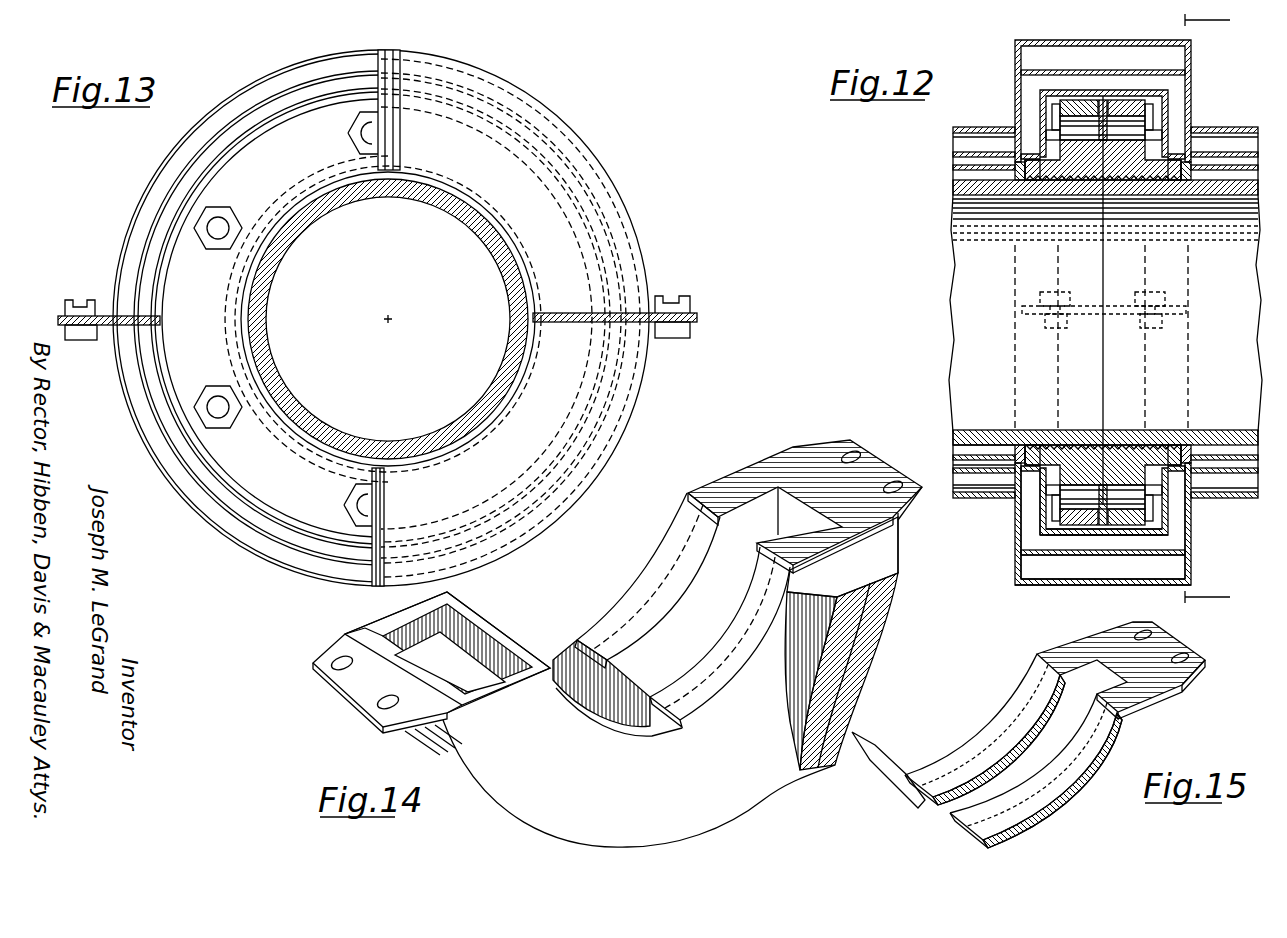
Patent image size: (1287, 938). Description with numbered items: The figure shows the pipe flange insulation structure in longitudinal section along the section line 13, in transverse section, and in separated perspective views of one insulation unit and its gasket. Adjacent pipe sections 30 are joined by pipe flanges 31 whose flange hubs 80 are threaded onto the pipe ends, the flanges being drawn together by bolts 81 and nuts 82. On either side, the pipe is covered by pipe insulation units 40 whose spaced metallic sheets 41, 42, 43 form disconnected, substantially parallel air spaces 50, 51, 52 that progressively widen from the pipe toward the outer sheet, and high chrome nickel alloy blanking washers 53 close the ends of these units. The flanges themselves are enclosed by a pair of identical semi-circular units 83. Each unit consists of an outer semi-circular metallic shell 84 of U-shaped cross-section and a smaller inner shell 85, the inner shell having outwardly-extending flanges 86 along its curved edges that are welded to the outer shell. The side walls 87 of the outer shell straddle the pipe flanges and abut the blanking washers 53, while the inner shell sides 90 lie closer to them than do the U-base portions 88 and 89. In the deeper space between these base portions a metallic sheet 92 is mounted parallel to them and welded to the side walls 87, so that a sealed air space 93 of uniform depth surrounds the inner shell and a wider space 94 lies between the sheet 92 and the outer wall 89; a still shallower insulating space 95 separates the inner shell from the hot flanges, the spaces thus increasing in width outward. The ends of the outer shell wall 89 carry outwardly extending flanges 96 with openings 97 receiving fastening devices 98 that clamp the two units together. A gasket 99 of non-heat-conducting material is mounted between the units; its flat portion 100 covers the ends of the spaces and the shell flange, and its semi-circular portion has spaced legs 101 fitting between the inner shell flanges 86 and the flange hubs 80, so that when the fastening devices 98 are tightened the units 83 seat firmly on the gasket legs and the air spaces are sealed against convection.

In FIG. 12, the section line 13— 13 is at (1221, 308).
In FIG. 13, the pipe section 30 is at (418, 204).
In FIG. 12, the pipe section 30 is at (973, 432).
In FIG. 13, the pipe flange 31 is at (265, 483).
In FIG. 12, the pipe flange 31 is at (1077, 100).
In FIG. 12, the pipe insulation unit 40 is at (1235, 123).
In FIG. 12, the outer sheet 41 is at (953, 142).
In FIG. 12, the metallic sheet 42 is at (953, 158).
In FIG. 12, the metallic sheet 43 is at (953, 170).
In FIG. 12, the air space 50 is at (960, 448).
In FIG. 12, the air space 51 is at (960, 466).
In FIG. 12, the air space 52 is at (960, 489).
In FIG. 12, the blanking washer 53 is at (1015, 135).
In FIG. 13, the flange hub 80 is at (470, 218).
In FIG. 12, the flange hub 80 is at (1046, 446).
In FIG. 13, the bolt 81 is at (229, 236).
In FIG. 12, the bolt 81 is at (1100, 120).
In FIG. 13, the nut 82 is at (228, 247).
In FIG. 12, the nut 82 is at (1156, 106).
In FIG. 13, the semi-circular unit 83 is at (521, 81).
In FIG. 12, the semi-circular unit 83 is at (1008, 37).
In FIG. 14, the semi-circular unit 83 is at (780, 439).
In FIG. 13, the outer shell 84 is at (154, 160).
In FIG. 12, the outer shell 84 is at (1017, 48).
In FIG. 14, the outer shell 84 is at (910, 559).
In FIG. 13, the inner shell 85 is at (200, 190).
In FIG. 12, the inner shell 85 is at (1034, 94).
In FIG. 14, the inner shell 85 is at (442, 645).
In FIG. 12, the inner shell flange 86 is at (1040, 500).
In FIG. 14, the inner shell flange 86 is at (685, 510).
In FIG. 12, the side wall 87 is at (1019, 545).
In FIG. 14, the side wall 87 is at (395, 612).
In FIG. 13, the U-base portion 88 is at (259, 118).
In FIG. 12, the U-base portion 88 is at (1115, 556).
In FIG. 14, the U-base portion 88 is at (392, 688).
In FIG. 13, the U-base portion 89 is at (273, 70).
In FIG. 12, the U-base portion 89 is at (1020, 582).
In FIG. 14, the U-base portion 89 is at (898, 608).
In FIG. 12, the side 90 is at (1046, 520).
In FIG. 14, the side 90 is at (470, 660).
In FIG. 13, the metallic sheet 92 is at (301, 88).
In FIG. 12, the metallic sheet 92 is at (1050, 580).
In FIG. 14, the metallic sheet 92 is at (852, 672).
In FIG. 12, the sealed air space 93 is at (1160, 555).
In FIG. 14, the sealed air space 93 is at (362, 633).
In FIG. 12, the space 94 is at (1183, 570).
In FIG. 14, the space 94 is at (358, 640).
In FIG. 12, the insulating space 95 is at (1170, 540).
In FIG. 13, the flange 96 is at (63, 322).
In FIG. 12, the flange 96 is at (1045, 320).
In FIG. 14, the flange 96 is at (915, 500).
In FIG. 14, the opening 97 is at (860, 459).
In FIG. 13, the fastening device 98 is at (78, 300).
In FIG. 12, the fastening device 98 is at (1045, 298).
In FIG. 14, the gasket 99 is at (722, 482).
In FIG. 15, the gasket 99 is at (1200, 695).
In FIG. 13, the flat portion 100 is at (112, 312).
In FIG. 12, the flat portion 100 is at (1186, 310).
In FIG. 14, the flat portion 100 is at (823, 447).
In FIG. 15, the flat portion 100 is at (1175, 646).
In FIG. 13, the leg 101 is at (528, 345).
In FIG. 12, the leg 101 is at (1065, 460).
In FIG. 14, the leg 101 is at (697, 665).
In FIG. 15, the leg 101 is at (995, 742).